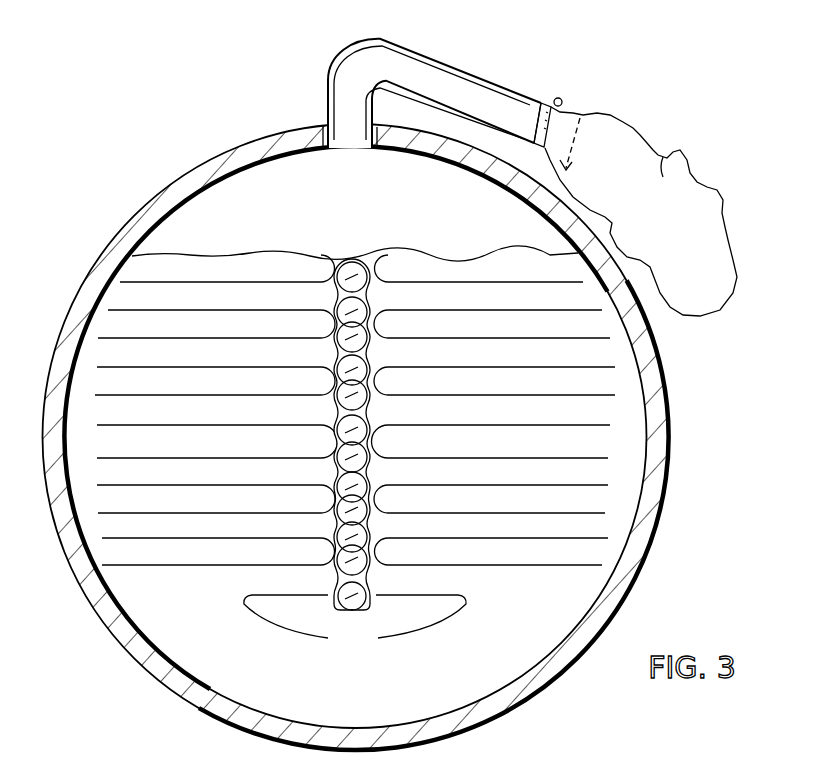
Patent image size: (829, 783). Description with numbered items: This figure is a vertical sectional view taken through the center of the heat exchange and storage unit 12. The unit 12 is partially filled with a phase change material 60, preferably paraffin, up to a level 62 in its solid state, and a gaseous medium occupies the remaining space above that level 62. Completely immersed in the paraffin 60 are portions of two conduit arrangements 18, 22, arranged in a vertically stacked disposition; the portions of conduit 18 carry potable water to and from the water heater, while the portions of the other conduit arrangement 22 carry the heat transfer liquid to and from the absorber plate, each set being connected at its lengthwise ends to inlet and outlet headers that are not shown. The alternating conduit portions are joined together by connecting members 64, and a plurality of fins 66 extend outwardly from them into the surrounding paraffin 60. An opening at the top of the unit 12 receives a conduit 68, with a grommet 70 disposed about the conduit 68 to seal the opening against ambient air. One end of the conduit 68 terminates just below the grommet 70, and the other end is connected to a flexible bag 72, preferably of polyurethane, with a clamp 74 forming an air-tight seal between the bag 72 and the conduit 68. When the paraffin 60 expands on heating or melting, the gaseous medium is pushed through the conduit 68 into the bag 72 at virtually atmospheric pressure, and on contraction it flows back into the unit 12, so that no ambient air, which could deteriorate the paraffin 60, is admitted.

The heat exchange and storage unit 12 is at (627, 584).
The conduit 18 is at (362, 287).
The conduit arrangement 22 is at (357, 316).
The phase change material 60 is at (522, 648).
The level 62 is at (502, 251).
The connecting members 64 is at (372, 347).
The fins 66 is at (556, 337).
The conduit 68 is at (370, 37).
The grommet 70 is at (328, 98).
The flexible bag 72 is at (660, 158).
The clamp 74 is at (558, 97).